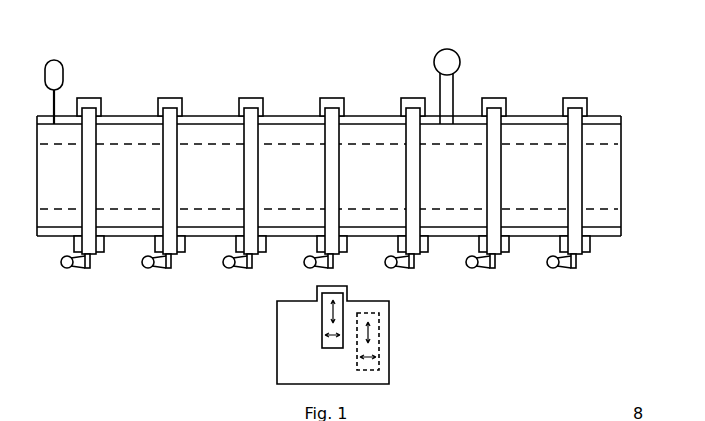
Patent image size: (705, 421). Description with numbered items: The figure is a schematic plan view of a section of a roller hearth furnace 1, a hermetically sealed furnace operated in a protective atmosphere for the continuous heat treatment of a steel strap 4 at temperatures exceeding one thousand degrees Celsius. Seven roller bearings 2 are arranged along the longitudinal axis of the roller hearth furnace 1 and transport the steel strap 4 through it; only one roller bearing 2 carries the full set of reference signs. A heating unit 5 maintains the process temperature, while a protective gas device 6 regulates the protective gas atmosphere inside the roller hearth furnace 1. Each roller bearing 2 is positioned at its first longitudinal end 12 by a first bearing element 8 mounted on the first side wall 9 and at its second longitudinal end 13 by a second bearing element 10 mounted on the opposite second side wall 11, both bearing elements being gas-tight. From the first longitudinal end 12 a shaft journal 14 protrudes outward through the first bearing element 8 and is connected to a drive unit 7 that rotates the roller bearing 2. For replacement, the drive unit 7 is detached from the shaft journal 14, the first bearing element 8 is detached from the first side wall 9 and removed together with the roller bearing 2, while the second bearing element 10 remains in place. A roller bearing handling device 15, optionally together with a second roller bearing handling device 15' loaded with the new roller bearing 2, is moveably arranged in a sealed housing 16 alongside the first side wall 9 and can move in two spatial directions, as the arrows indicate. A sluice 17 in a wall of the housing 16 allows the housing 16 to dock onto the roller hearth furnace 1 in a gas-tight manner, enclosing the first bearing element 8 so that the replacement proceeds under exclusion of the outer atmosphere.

The roller hearth furnace 1 is at (340, 175).
The roller bearing 2 is at (595, 184).
The steel strap 4 is at (523, 172).
The heating unit 5 is at (63, 75).
The protective gas device 6 is at (456, 53).
The drive unit 7 is at (548, 266).
The first bearing element 8 is at (590, 244).
The first side wall 9 is at (136, 233).
The second bearing element 10 is at (577, 98).
The second side wall 11 is at (138, 120).
The first longitudinal end 12 is at (575, 242).
The second longitudinal end 13 is at (574, 122).
The shaft journal 14 is at (577, 268).
The roller bearing handling device 15 is at (274, 323).
The roller bearing handling device 15' is at (402, 343).
The housing 16 is at (327, 346).
The sluice 17 is at (347, 289).